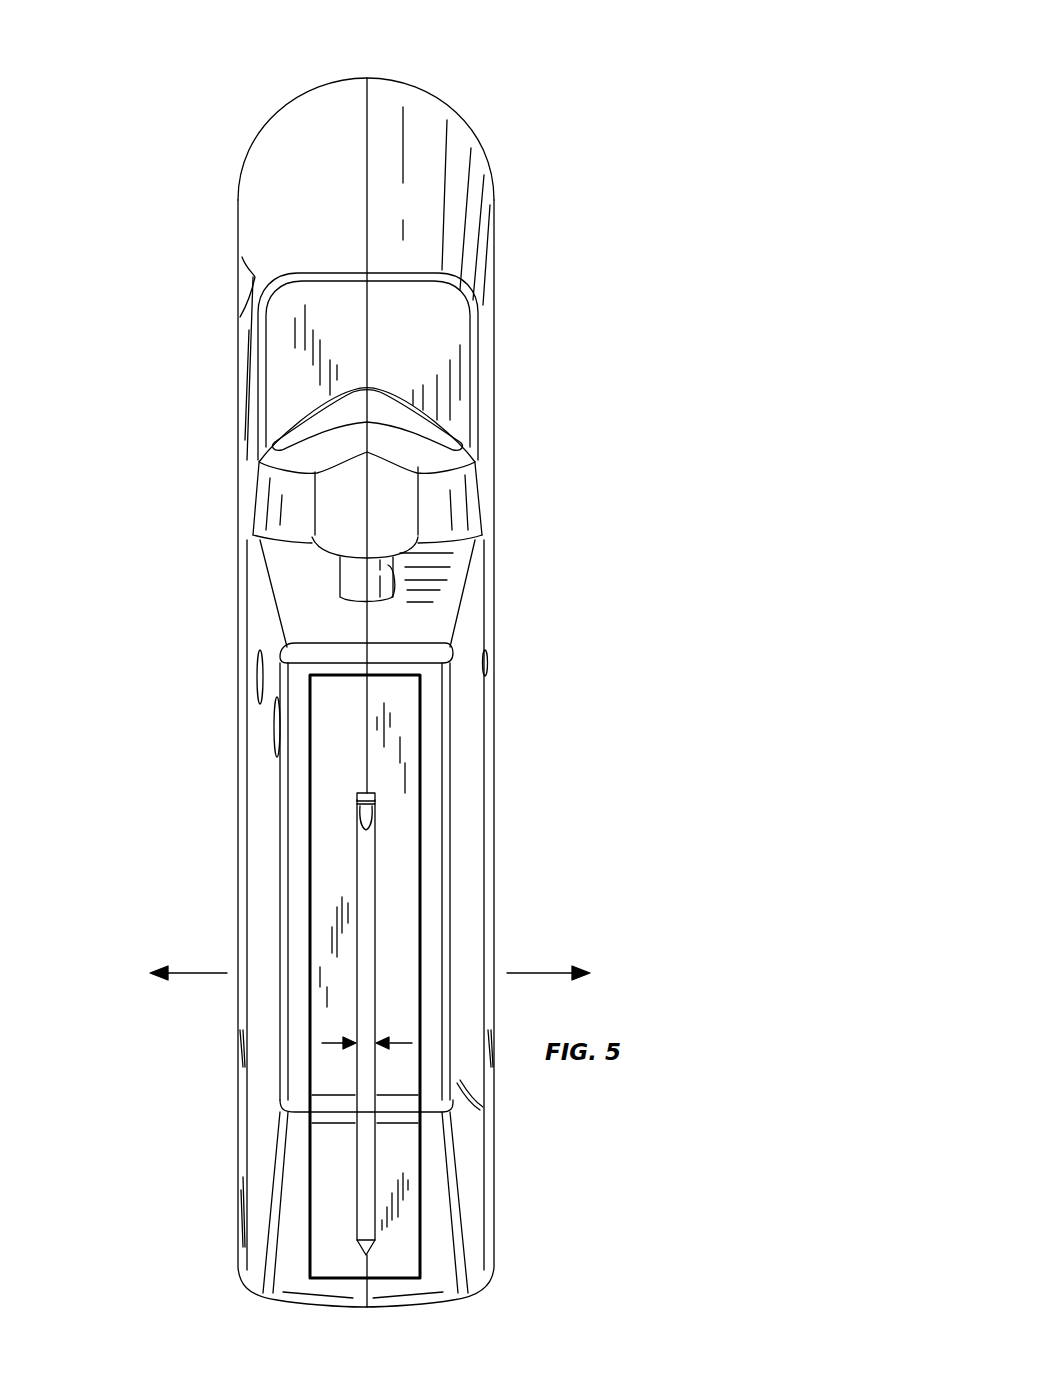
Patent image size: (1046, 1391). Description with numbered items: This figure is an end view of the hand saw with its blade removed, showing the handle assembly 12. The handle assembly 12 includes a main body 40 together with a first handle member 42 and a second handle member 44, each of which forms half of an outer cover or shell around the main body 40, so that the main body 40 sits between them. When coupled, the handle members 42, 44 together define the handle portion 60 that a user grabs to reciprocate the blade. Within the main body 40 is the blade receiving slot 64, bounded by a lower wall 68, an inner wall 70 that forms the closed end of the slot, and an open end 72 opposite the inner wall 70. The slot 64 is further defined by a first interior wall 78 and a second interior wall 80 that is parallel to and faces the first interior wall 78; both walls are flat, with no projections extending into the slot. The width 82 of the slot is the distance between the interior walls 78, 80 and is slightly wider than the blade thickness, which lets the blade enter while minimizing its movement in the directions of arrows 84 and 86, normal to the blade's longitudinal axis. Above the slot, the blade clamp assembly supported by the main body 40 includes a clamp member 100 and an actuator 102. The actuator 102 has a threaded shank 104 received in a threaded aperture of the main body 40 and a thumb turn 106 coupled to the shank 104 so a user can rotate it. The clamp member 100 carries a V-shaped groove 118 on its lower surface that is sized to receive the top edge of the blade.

The handle assembly 12 is at (593, 157).
The main body 40 is at (405, 705).
The first handle member 42 is at (293, 152).
The second handle member 44 is at (463, 138).
The handle portion 60 is at (240, 485).
The blade receiving slot 64 is at (370, 885).
The lower wall 68 is at (367, 1237).
The inner wall 70 is at (363, 1177).
The open end 72 is at (360, 947).
The first interior wall 78 is at (360, 973).
The second interior wall 80 is at (373, 1003).
The width 82 is at (400, 1043).
The arrow 84 is at (565, 970).
The arrow 86 is at (183, 970).
The clamp member 100 is at (377, 797).
The actuator 102 is at (420, 573).
The threaded shank 104 is at (357, 580).
The thumb turn 106 is at (428, 433).
The V-shaped groove 118 is at (373, 830).